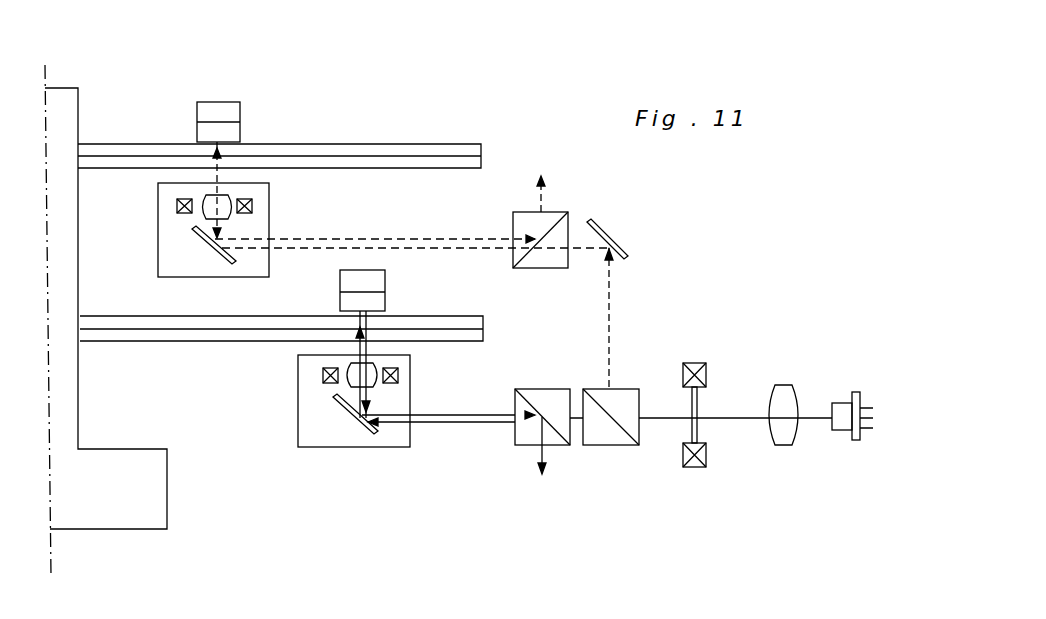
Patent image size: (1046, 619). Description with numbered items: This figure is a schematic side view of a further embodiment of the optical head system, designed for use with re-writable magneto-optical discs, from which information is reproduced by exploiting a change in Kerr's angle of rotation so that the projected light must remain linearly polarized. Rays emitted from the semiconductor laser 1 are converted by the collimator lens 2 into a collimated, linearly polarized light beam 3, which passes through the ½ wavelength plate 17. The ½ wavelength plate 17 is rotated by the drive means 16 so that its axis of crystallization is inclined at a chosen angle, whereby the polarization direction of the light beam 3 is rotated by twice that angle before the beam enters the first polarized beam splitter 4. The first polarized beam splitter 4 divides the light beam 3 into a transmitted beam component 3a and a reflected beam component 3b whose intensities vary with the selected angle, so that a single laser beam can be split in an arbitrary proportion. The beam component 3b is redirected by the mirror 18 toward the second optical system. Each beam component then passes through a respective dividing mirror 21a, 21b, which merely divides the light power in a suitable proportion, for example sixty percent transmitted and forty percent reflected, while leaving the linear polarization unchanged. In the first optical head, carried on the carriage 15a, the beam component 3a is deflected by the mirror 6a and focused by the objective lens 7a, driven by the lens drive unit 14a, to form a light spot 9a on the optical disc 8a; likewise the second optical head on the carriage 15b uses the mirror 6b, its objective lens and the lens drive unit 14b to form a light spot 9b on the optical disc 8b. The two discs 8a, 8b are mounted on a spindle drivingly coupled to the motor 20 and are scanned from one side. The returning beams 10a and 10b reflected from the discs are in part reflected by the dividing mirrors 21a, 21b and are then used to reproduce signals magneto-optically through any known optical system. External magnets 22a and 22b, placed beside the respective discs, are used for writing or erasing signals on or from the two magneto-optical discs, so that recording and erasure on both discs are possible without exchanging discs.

The semiconductor laser 1 is at (840, 403).
The collimator lens 2 is at (785, 386).
The light beam 3 is at (748, 420).
The beam component 3a is at (440, 424).
The beam component 3b is at (322, 248).
The first polarized beam splitter 4 is at (628, 389).
The mirror 6a is at (352, 421).
The mirror 6b is at (212, 252).
The objective lens 7a is at (226, 200).
The optical disc 8a is at (483, 321).
The optical disc 8b is at (481, 149).
The light spot 9a is at (367, 329).
The light spot 9b is at (220, 153).
The returned beam 10a is at (460, 412).
The returned beam 10b is at (343, 238).
The lens drive unit 14a is at (323, 374).
The lens drive unit 14b is at (177, 203).
The carriage 15a is at (298, 432).
The carriage 15b is at (158, 265).
The drive means 16 is at (693, 363).
The ½ wavelength plate 17 is at (690, 430).
The mirror 18 is at (614, 237).
The motor 20 is at (72, 106).
The dividing mirror 21a is at (532, 389).
The dividing mirror 21b is at (550, 212).
The external magnet 22a is at (385, 279).
The external magnet 22b is at (210, 100).